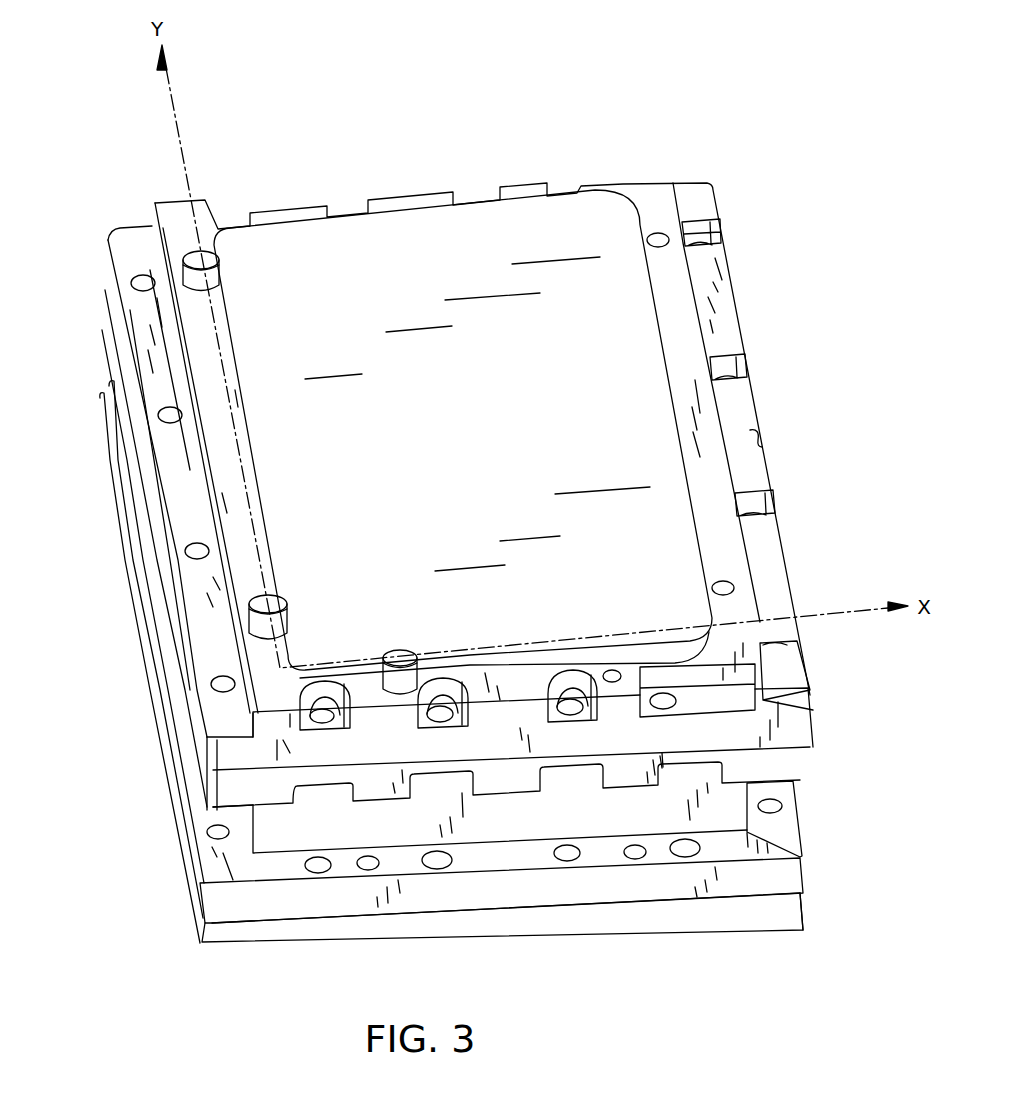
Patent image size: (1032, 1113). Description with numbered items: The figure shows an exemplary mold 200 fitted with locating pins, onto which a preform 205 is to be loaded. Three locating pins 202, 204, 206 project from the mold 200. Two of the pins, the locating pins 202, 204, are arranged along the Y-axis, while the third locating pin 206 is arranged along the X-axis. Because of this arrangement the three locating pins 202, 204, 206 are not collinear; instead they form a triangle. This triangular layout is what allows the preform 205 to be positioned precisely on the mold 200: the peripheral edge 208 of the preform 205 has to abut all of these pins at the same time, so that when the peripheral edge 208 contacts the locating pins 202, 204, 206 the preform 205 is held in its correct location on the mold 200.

The mold 200 is at (650, 198).
The locating pin 202 is at (198, 255).
The locating pin 204 is at (248, 603).
The preform 205 is at (480, 232).
The locating pin 206 is at (398, 692).
The peripheral edge 208 is at (235, 373).